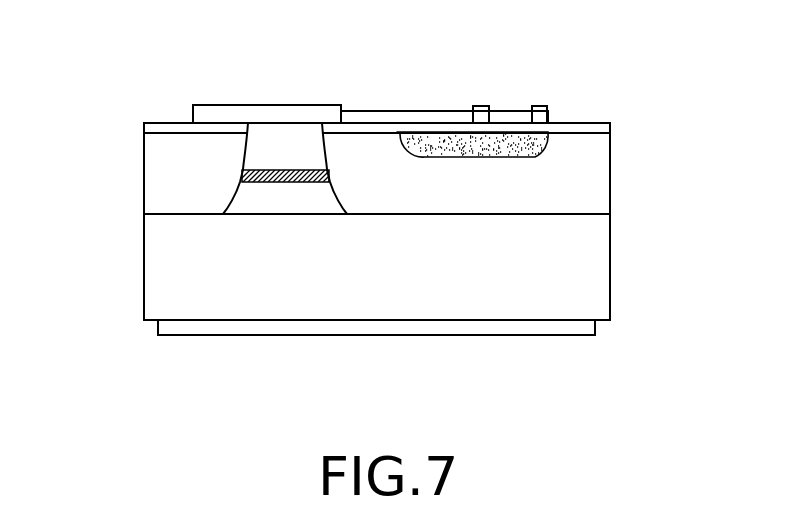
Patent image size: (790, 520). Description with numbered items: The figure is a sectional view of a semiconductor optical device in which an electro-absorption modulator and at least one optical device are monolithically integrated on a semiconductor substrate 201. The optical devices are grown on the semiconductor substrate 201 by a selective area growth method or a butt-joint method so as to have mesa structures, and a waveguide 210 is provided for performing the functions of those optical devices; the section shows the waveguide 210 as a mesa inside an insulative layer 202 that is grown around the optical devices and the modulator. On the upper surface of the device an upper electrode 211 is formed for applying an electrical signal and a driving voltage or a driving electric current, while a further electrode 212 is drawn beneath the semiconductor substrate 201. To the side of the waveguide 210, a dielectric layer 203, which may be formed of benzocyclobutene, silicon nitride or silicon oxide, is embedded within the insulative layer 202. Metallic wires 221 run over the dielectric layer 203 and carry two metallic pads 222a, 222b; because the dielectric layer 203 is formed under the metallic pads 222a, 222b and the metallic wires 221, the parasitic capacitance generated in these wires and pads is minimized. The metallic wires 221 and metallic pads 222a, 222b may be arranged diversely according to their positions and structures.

The semiconductor substrate 201 is at (587, 275).
The insulative layer 202 is at (158, 198).
The dielectric layer 203 is at (548, 138).
The waveguide 210 is at (230, 157).
The upper electrode 211 is at (215, 110).
The lower electrode 212 is at (289, 307).
The metallic wire 221 is at (398, 110).
The metallic pad 222a is at (481, 115).
The metallic pad 222b is at (542, 110).